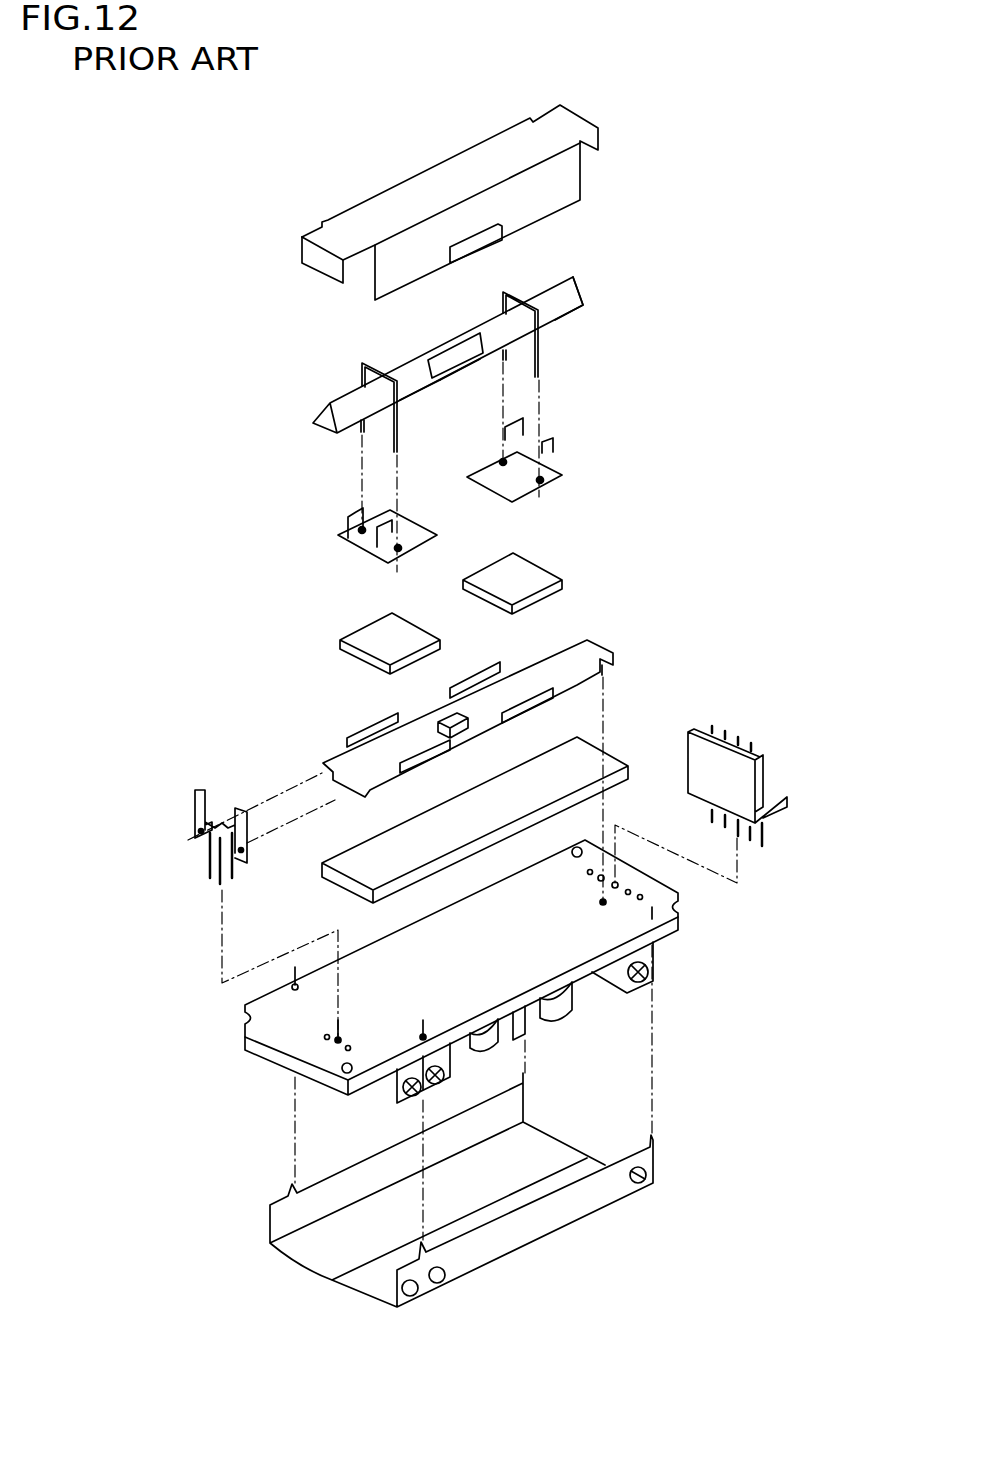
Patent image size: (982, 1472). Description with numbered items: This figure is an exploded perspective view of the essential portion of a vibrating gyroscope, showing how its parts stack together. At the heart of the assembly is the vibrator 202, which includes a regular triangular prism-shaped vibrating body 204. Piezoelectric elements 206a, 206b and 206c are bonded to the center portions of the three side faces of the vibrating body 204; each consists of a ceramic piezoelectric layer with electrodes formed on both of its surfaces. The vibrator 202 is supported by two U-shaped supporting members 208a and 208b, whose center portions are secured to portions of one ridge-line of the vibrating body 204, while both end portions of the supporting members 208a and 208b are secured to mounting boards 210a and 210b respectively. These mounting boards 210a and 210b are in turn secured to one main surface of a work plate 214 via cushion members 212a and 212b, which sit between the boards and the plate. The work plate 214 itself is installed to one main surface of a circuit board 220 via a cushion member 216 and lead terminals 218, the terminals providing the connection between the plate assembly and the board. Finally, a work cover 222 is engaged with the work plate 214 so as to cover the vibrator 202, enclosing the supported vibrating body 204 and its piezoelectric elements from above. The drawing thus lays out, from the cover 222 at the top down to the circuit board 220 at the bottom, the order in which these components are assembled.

The work cover 222 is at (562, 180).
The vibrator 202 is at (580, 283).
The vibrating body 204 is at (562, 312).
The piezoelectric element 206a is at (410, 362).
The piezoelectric element 206b is at (457, 360).
The piezoelectric element 206c is at (417, 400).
The supporting member 208a is at (362, 370).
The supporting member 208b is at (545, 358).
The mounting board 210a is at (353, 553).
The mounting board 210b is at (520, 488).
The cushion member 212a is at (376, 647).
The cushion member 212b is at (528, 584).
The work plate 214 is at (583, 657).
The cushion member 216 is at (597, 763).
The lead terminals 218 is at (232, 878).
The circuit board 220 is at (290, 1036).